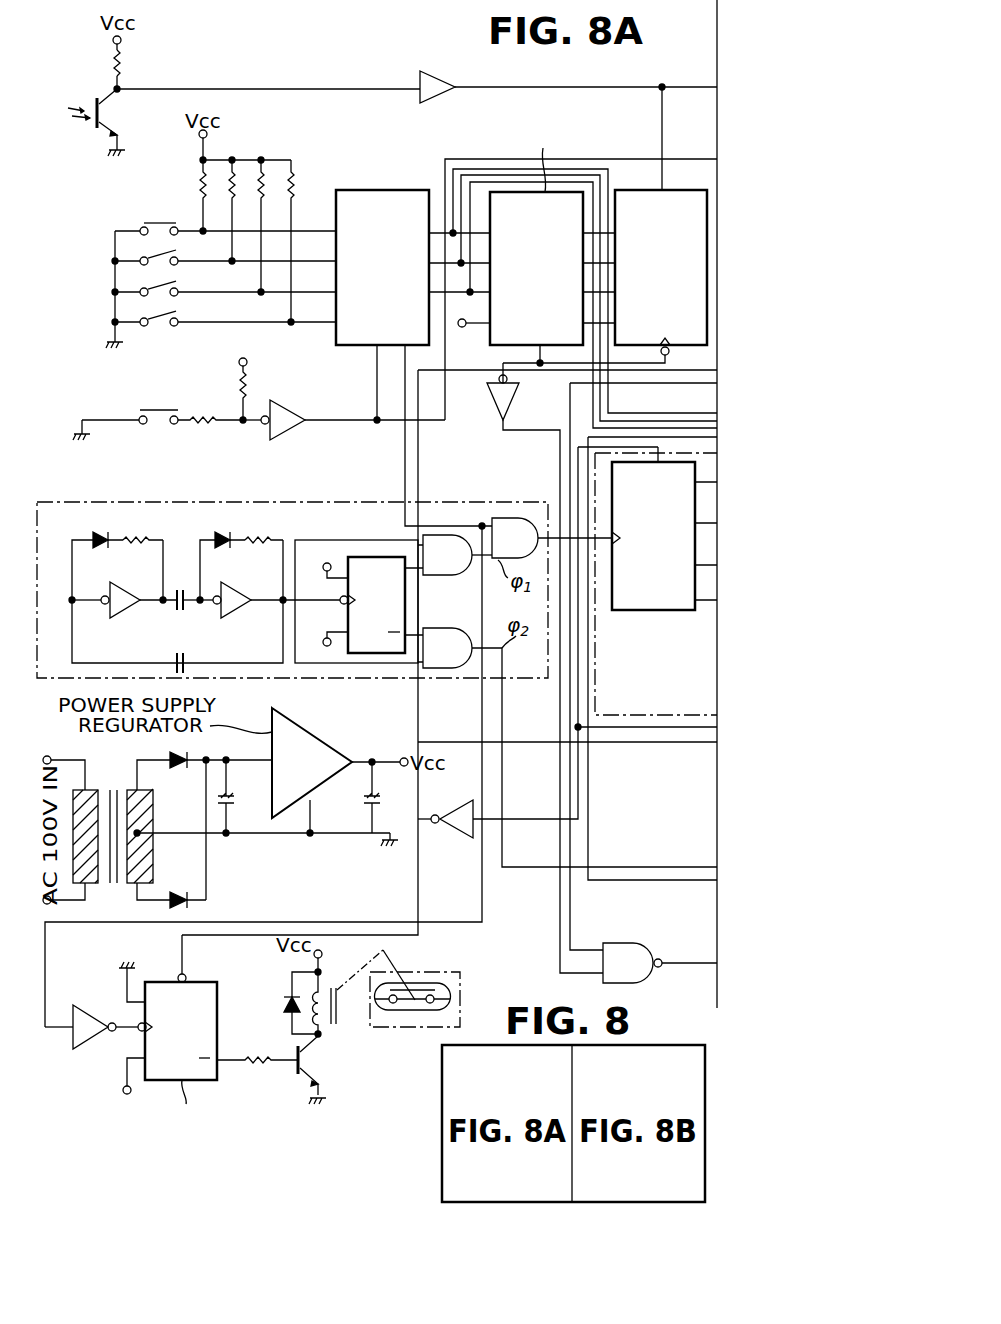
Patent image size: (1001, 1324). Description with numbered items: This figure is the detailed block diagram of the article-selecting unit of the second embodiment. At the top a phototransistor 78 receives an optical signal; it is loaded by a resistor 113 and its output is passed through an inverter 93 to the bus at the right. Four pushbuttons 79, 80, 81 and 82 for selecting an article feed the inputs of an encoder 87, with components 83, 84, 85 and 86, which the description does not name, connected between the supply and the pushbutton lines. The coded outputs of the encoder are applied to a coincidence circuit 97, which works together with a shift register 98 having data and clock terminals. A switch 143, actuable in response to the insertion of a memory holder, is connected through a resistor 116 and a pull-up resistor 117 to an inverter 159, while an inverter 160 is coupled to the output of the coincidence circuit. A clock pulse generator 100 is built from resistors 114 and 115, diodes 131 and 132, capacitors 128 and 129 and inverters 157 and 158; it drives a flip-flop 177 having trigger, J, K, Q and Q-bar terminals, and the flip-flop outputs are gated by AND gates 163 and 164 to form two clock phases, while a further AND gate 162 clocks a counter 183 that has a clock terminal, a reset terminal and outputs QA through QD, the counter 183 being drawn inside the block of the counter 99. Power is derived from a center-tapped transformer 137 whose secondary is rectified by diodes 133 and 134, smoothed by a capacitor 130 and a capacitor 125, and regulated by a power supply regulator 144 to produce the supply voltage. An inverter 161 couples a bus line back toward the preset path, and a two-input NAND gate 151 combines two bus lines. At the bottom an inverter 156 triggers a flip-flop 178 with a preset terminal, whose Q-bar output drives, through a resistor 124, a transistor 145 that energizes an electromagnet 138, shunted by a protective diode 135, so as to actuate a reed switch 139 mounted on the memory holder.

The resistor 113 is at (128, 64).
The phototransistor 78 is at (105, 112).
The inverter 93 is at (420, 82).
The coincidence circuit 97 is at (497, 192).
The shift register 98 is at (690, 190).
The resistor 83 is at (198, 190).
The resistor 84 is at (232, 172).
The resistor 85 is at (262, 172).
The resistor 86 is at (293, 172).
The pushbutton 79 is at (160, 222).
The pushbutton 80 is at (176, 250).
The pushbutton 81 is at (176, 281).
The pushbutton 82 is at (176, 311).
The encoder 87 is at (350, 345).
The switch 143 is at (160, 410).
The resistor 116 is at (205, 415).
The resistor 117 is at (250, 394).
The inverter 159 is at (292, 432).
The inverter 160 is at (496, 396).
The clock pulse generator 100 is at (443, 500).
The counter 183 is at (612, 476).
The diode 131 is at (92, 538).
The capacitor 128 is at (183, 580).
The diode 132 is at (217, 540).
The resistor 114 is at (136, 547).
The resistor 115 is at (256, 548).
The inverter 157 is at (118, 612).
The capacitor 129 is at (183, 655).
The inverter 158 is at (229, 612).
The flip-flop 177 is at (405, 598).
The AND gate 163 is at (447, 555).
The AND gate 162 is at (515, 538).
The AND gate 164 is at (447, 648).
The power supply regulator 144 is at (300, 727).
The center-tapped transformer 137 is at (110, 790).
The diode 133 is at (178, 770).
The diode 134 is at (178, 892).
The capacitor 130 is at (242, 798).
The capacitor 125 is at (385, 798).
The inverter 161 is at (450, 828).
The counter 99 is at (612, 715).
The two-input NAND gate 151 is at (640, 946).
The diode 135 is at (282, 1009).
The electromagnet 138 is at (330, 1036).
The reed switch 139 is at (400, 1027).
The flip-flop 178 is at (217, 1036).
The inverter 156 is at (85, 1050).
The resistor 124 is at (258, 1070).
The transistor 145 is at (316, 1068).